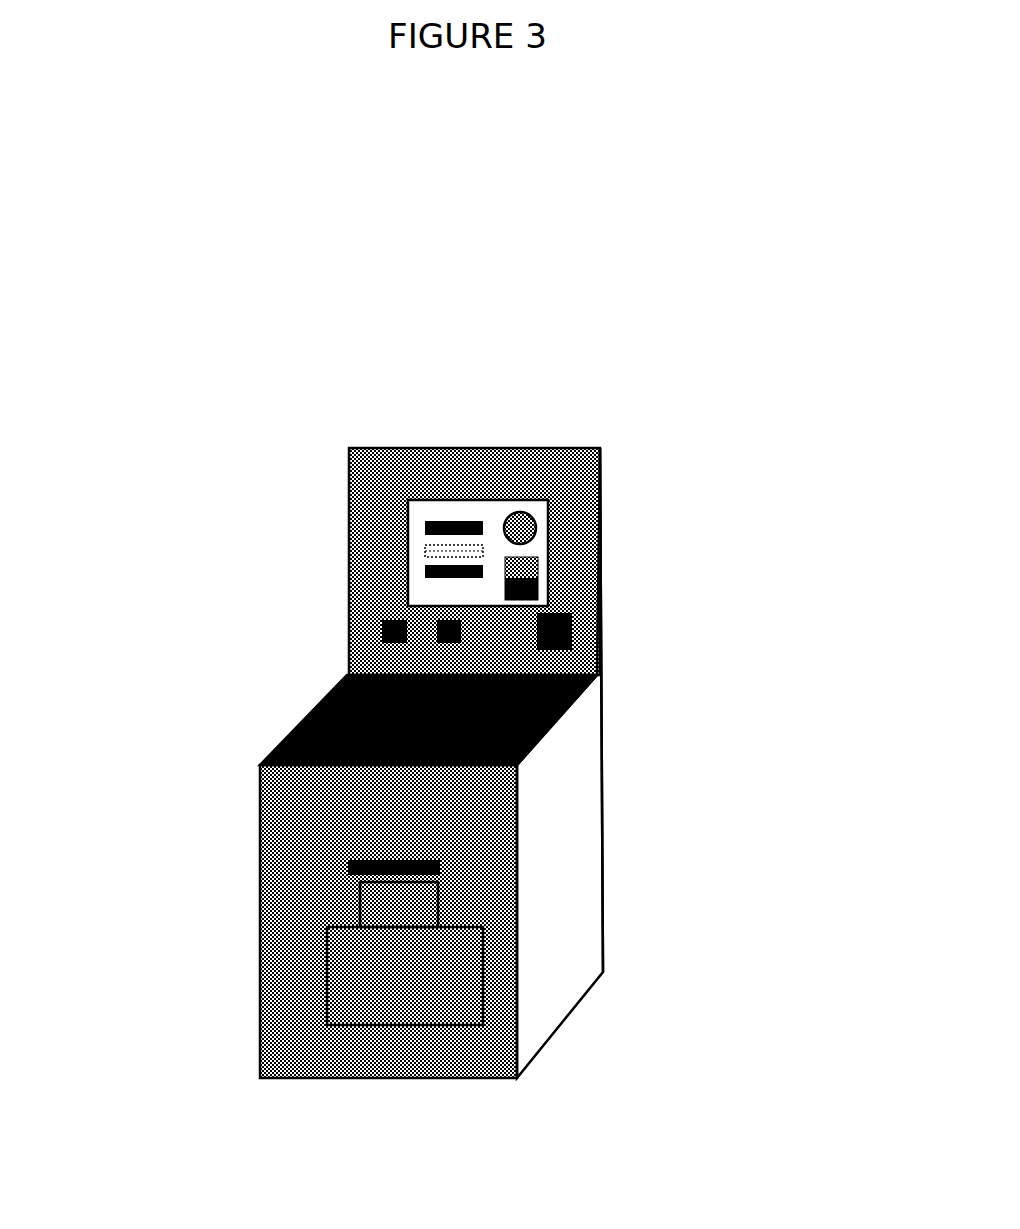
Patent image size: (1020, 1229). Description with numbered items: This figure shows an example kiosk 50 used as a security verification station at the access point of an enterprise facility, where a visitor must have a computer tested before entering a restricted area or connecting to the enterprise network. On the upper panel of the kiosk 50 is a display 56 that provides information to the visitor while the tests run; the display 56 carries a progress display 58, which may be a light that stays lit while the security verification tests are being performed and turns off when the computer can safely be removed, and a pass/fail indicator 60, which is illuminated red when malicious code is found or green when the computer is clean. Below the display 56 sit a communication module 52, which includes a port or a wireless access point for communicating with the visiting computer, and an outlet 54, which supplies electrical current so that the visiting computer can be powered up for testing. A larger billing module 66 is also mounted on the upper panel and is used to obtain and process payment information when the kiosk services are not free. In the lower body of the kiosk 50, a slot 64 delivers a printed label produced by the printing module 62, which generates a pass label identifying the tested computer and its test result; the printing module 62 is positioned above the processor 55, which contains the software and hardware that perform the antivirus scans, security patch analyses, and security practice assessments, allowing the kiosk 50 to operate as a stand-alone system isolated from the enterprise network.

The kiosk 50 is at (687, 655).
The communication module 52 is at (432, 617).
The outlet 54 is at (380, 631).
The processor 55 is at (437, 968).
The display 56 is at (435, 494).
The progress display 58 is at (531, 513).
The pass/fail indicator 60 is at (525, 570).
The printing module 62 is at (418, 902).
The slot 64 is at (342, 872).
The billing module 66 is at (579, 624).